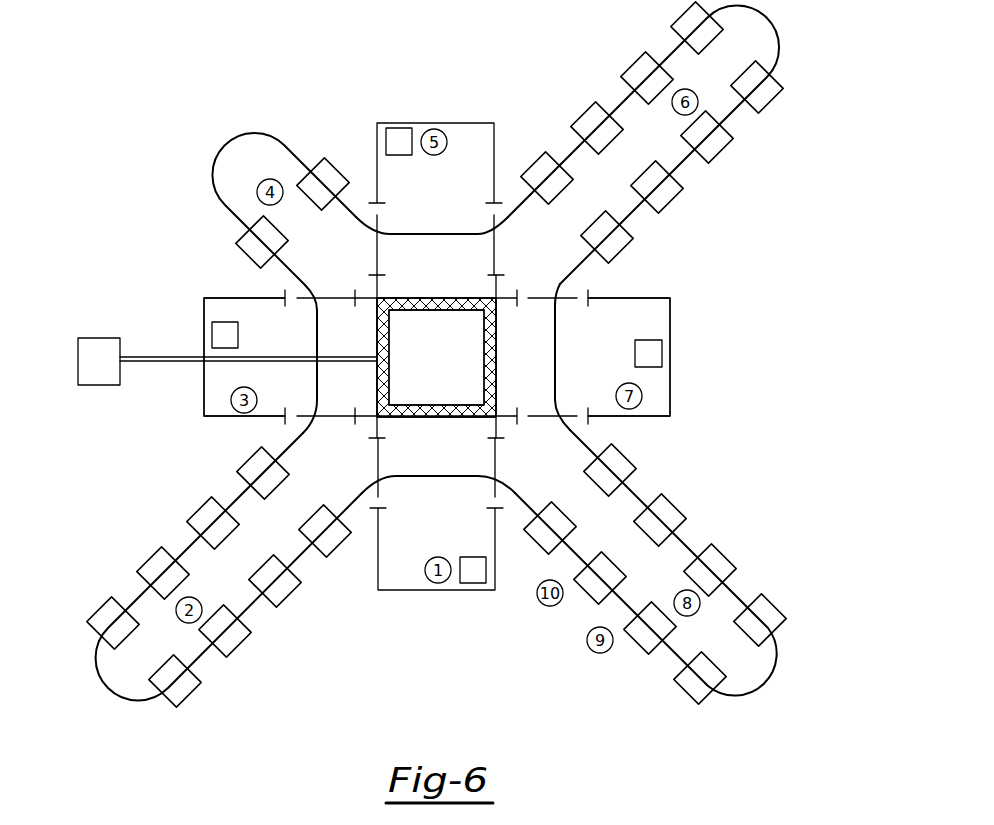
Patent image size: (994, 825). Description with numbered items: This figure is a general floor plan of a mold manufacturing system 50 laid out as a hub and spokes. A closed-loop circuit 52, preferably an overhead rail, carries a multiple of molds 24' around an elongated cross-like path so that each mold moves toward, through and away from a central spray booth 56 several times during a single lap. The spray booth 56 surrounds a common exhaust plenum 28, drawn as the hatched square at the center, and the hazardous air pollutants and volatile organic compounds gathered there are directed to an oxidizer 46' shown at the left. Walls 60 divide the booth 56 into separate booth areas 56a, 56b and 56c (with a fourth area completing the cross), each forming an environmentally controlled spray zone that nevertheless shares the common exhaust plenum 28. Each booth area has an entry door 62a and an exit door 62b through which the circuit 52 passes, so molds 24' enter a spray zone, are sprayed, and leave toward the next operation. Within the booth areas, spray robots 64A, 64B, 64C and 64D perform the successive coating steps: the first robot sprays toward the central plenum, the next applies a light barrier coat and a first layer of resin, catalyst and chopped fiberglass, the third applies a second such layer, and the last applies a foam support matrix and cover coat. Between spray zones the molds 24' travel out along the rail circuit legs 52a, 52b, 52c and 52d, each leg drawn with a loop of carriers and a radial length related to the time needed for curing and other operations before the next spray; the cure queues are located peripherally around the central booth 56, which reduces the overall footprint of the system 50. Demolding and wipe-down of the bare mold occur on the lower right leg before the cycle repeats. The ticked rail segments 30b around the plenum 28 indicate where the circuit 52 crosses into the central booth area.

The mold manufacturing system 50 is at (548, 103).
The circuit 52 is at (588, 442).
The rail circuit leg 52a is at (118, 697).
The rail circuit leg 52b is at (224, 147).
The rail circuit leg 52c is at (773, 29).
The rail circuit leg 52d is at (770, 684).
The mold 24' is at (434, 380).
The spray booth 56 is at (745, 289).
The booth area 56a is at (395, 578).
The booth area 56b is at (657, 322).
The booth area 56c is at (477, 135).
The walls 60 is at (643, 297).
The entry door 62a is at (377, 224).
The exit door 62b is at (568, 415).
The spray robot 64A is at (467, 583).
The spray robot 64B is at (212, 330).
The spray robot 64C is at (396, 128).
The spray robot 64D is at (662, 355).
The common exhaust plenum 28 is at (448, 368).
The transfer rail 30b is at (480, 255).
The oxidizer 46' is at (227, 361).